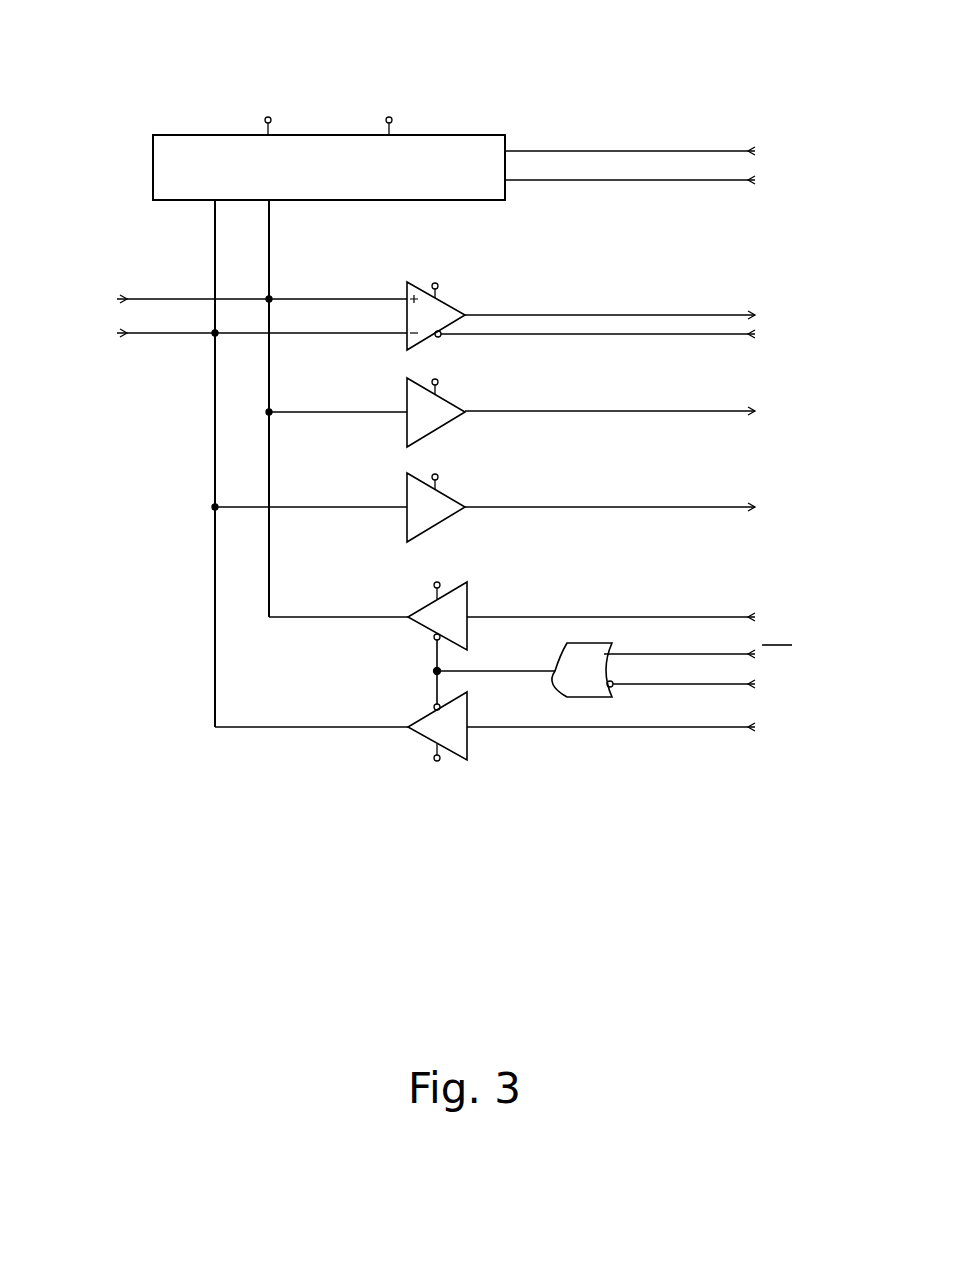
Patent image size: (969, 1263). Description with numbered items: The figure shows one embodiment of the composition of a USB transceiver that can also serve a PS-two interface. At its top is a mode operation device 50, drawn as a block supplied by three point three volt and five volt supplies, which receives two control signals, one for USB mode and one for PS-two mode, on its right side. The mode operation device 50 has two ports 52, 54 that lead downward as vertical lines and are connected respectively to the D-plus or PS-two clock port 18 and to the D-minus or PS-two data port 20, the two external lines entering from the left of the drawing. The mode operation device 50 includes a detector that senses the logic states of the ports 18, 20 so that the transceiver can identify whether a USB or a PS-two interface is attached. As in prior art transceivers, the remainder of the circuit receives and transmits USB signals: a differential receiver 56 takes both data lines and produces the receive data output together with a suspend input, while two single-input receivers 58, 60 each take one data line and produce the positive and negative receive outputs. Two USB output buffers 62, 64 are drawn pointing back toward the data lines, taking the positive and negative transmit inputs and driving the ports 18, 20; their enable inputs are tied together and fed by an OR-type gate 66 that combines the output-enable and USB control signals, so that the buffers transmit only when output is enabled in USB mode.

The D+ or PS/2 Clk port 18 is at (210, 290).
The D− or PS/2 Data port 20 is at (207, 337).
The mode operation device 50 is at (203, 135).
The port of the mode operation device 52 is at (270, 215).
The port of the mode operation device 54 is at (215, 222).
The differential receiver 56 is at (455, 302).
The single-input receiver 58 is at (452, 400).
The single-input receiver 60 is at (452, 497).
The USB output buffer 62 is at (468, 598).
The USB output buffer 64 is at (468, 747).
The OR gate 66 is at (562, 648).